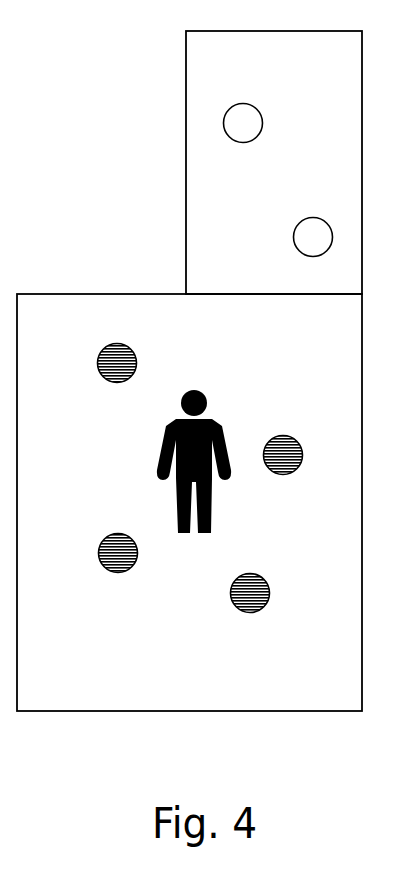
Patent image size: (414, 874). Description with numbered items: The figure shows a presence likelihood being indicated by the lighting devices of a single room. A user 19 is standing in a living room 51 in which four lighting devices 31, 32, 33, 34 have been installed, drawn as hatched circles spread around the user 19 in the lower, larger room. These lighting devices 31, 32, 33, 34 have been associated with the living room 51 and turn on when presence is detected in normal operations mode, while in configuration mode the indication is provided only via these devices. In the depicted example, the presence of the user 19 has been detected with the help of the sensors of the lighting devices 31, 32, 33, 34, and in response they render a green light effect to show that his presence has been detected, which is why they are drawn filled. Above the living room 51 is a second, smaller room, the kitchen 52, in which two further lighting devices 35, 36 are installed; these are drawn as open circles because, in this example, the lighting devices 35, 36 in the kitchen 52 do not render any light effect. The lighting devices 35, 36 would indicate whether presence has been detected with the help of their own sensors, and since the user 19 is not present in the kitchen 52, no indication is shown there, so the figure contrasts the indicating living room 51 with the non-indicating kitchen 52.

The user 19 is at (163, 463).
The lighting device 31 is at (135, 355).
The lighting device 32 is at (290, 437).
The lighting device 33 is at (258, 573).
The lighting device 34 is at (112, 574).
The lighting device 35 is at (262, 116).
The lighting device 36 is at (332, 227).
The living room 51 is at (68, 294).
The kitchen 52 is at (186, 111).